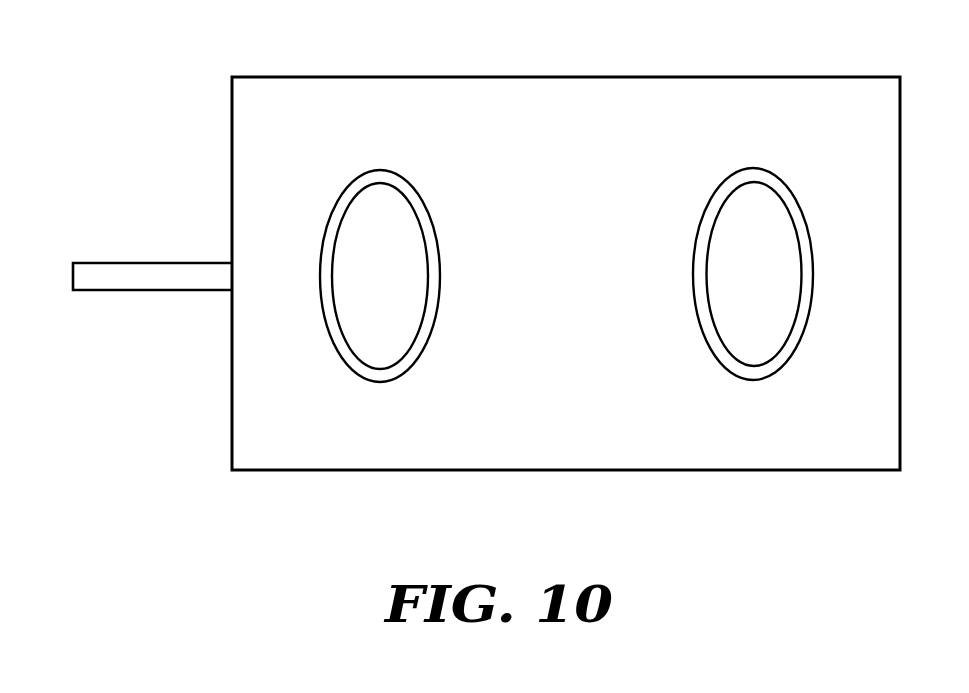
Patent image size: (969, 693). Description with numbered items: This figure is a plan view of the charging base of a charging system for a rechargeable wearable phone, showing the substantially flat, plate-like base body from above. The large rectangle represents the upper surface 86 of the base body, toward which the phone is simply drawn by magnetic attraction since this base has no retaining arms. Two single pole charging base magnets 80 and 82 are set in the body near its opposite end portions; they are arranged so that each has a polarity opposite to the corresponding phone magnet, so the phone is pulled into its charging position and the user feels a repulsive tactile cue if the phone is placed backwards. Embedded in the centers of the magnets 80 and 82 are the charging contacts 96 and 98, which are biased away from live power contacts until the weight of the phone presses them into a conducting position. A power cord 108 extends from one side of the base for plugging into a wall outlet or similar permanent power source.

The upper surface 86 is at (536, 96).
The power cord 108 is at (165, 287).
The charging base magnet 80 is at (408, 366).
The charging contact 96 is at (350, 222).
The charging base magnet 82 is at (803, 340).
The charging contact 98 is at (770, 208).